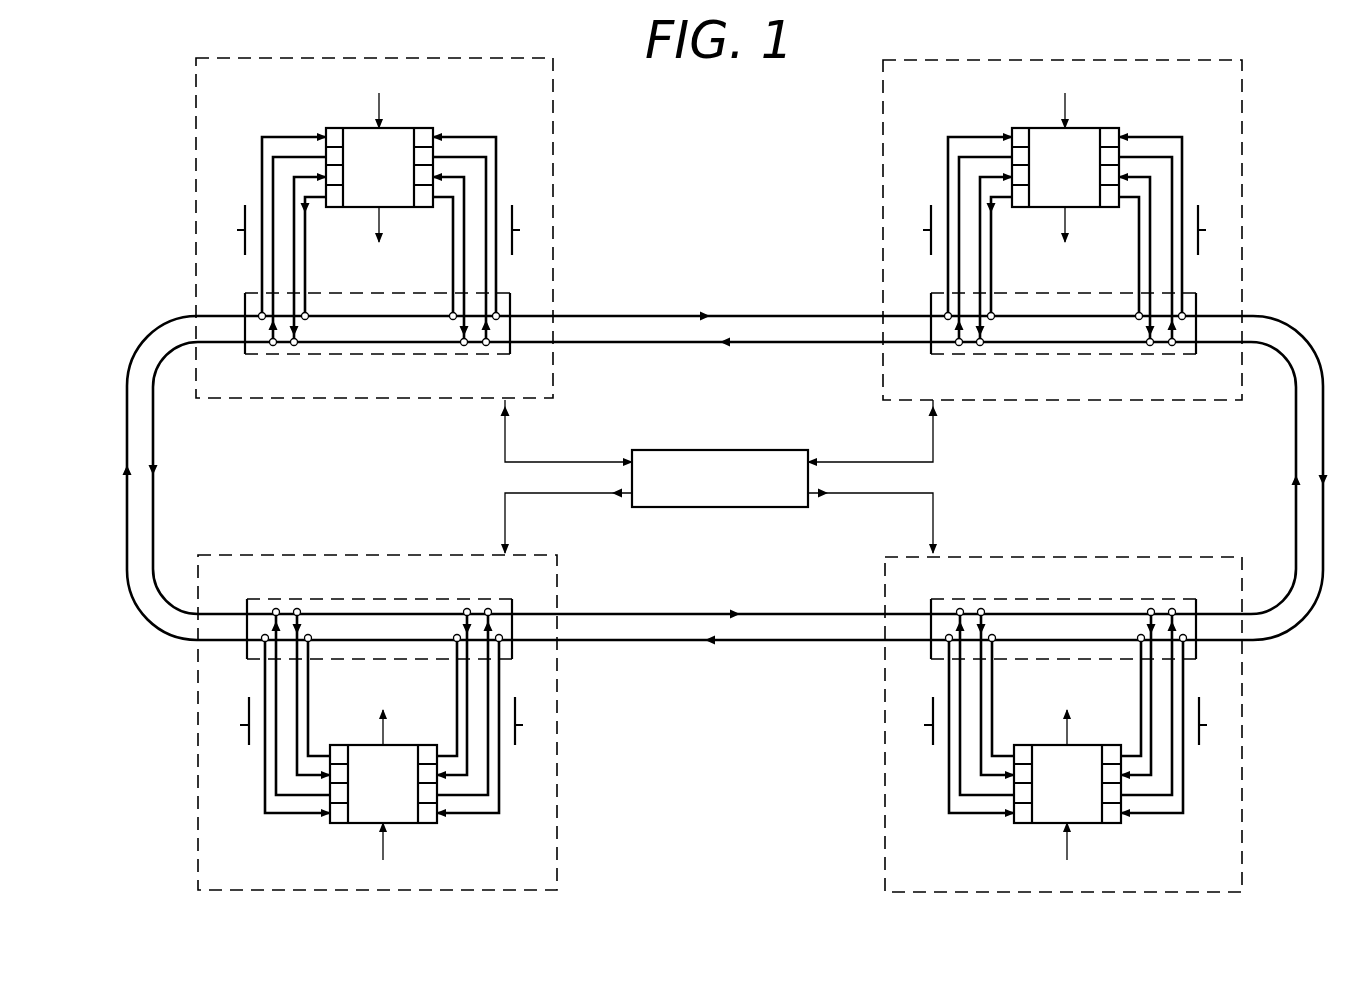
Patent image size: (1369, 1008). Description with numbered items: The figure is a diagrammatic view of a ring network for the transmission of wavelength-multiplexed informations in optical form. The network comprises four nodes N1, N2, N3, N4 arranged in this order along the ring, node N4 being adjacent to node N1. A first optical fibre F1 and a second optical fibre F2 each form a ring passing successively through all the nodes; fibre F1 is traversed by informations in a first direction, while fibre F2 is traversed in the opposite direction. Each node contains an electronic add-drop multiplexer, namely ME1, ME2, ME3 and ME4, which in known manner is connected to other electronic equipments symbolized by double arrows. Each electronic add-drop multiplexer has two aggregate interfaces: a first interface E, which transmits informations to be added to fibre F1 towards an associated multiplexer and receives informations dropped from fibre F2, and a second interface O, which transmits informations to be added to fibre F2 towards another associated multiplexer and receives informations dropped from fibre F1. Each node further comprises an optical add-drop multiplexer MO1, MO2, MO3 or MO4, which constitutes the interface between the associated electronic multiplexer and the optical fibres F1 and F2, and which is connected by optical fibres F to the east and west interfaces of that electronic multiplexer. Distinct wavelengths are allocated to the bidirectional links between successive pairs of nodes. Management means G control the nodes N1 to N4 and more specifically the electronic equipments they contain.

The node N1 is at (545, 98).
The node N2 is at (1038, 230).
The node N3 is at (1038, 724).
The node N4 is at (550, 852).
The electronic add-drop multiplexer ME1 is at (379, 155).
The electronic add-drop multiplexer ME2 is at (1065, 155).
The electronic add-drop multiplexer ME3 is at (1067, 798).
The electronic add-drop multiplexer ME4 is at (383, 798).
The optical add-drop multiplexer MO1 is at (407, 355).
The optical add-drop multiplexer MO2 is at (1063, 344).
The optical add-drop multiplexer MO3 is at (1063, 612).
The optical add-drop multiplexer MO4 is at (407, 598).
The management means G is at (719, 476).
The first optical fibre F1 is at (763, 313).
The second optical fibre F2 is at (763, 347).
The optical fibres F is at (273, 178).
The aggregate interface O is at (323, 129).
The east interface E is at (436, 129).